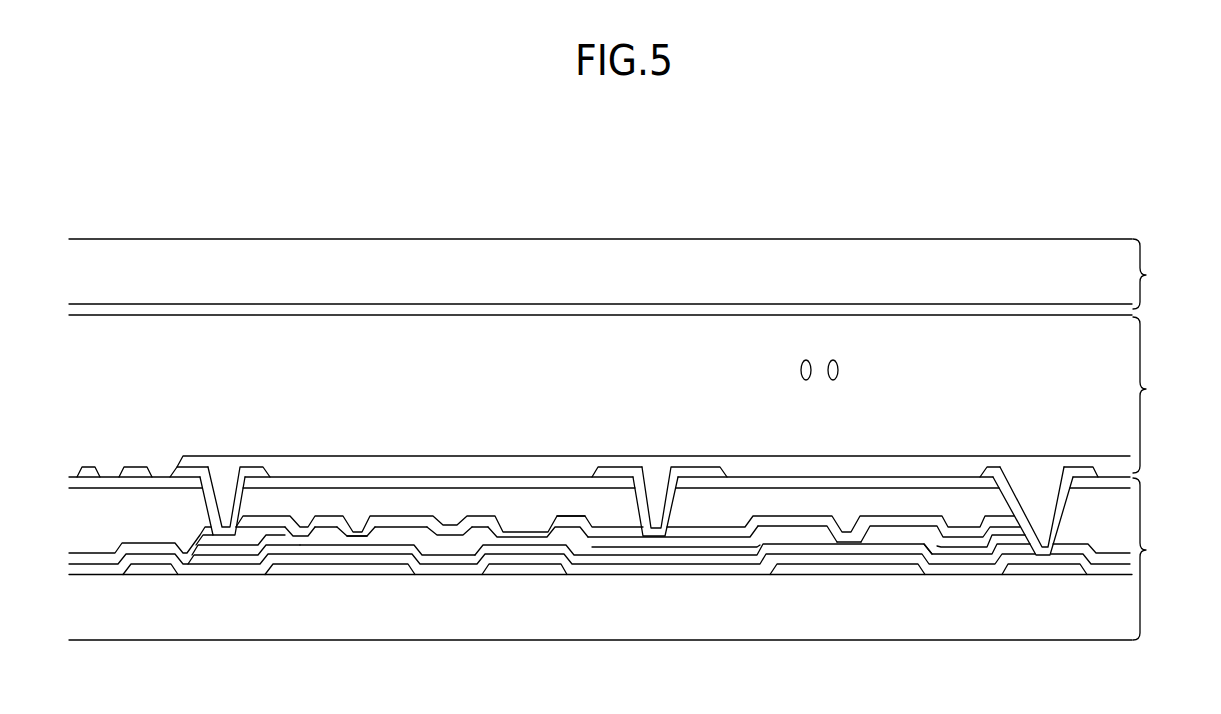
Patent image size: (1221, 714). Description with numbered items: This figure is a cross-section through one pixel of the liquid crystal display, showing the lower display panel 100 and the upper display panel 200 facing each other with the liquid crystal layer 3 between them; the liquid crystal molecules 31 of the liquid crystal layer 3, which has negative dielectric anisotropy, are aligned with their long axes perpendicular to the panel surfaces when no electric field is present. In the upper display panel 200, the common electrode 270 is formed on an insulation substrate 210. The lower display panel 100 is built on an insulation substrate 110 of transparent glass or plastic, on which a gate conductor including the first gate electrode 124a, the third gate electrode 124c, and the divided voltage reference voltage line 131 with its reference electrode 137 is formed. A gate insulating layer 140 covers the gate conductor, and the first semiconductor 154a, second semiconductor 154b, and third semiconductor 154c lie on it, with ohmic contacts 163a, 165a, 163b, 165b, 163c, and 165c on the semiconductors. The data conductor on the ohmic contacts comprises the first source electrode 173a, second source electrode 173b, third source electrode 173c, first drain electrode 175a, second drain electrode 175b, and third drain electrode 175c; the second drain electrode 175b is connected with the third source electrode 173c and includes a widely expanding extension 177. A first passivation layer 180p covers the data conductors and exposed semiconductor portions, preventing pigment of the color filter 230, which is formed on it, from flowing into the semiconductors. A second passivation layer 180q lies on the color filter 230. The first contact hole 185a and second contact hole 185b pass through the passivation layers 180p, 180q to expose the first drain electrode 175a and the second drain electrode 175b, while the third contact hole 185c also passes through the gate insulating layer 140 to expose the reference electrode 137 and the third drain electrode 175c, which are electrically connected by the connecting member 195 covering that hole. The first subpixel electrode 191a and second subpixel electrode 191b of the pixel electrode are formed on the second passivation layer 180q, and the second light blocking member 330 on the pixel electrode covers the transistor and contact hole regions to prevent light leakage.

The upper display panel 200 is at (624, 277).
The insulation substrate 210 is at (687, 254).
The common electrode 270 is at (793, 305).
The liquid crystal layer 3 is at (1150, 395).
The liquid crystal molecules 31 is at (839, 370).
The lower display panel 100 is at (624, 559).
The insulation substrate 110 is at (760, 615).
The divided voltage reference voltage line 131 is at (149, 570).
The first gate electrode 124a is at (300, 566).
The third gate electrode 124c is at (832, 568).
The reference electrode 137 is at (1043, 568).
The gate insulating layer 140 is at (677, 568).
The first semiconductor 154a is at (283, 558).
The second semiconductor 154b is at (395, 558).
The third semiconductor 154c is at (543, 546).
The ohmic contact 163a is at (336, 546).
The ohmic contact 163b is at (357, 540).
The ohmic contact 163c is at (811, 540).
The ohmic contact 165a is at (207, 550).
The ohmic contact 165b is at (432, 540).
The ohmic contact 165c is at (905, 542).
The first source electrode 173a is at (311, 524).
The second source electrode 173b is at (343, 523).
The third source electrode 173c is at (566, 516).
The first drain electrode 175a is at (227, 538).
The second drain electrode 175b is at (392, 523).
The third drain electrode 175c is at (891, 525).
The extension 177 is at (700, 538).
The first passivation layer 180p is at (94, 556).
The second passivation layer 180q is at (494, 481).
The color filter 230 is at (450, 497).
The second light blocking member 330 is at (733, 464).
The first subpixel electrode 191a is at (85, 468).
The second subpixel electrode 191b is at (612, 462).
The connecting member 195 is at (1075, 464).
The first contact hole 185a is at (218, 500).
The second contact hole 185b is at (648, 500).
The third contact hole 185c is at (1022, 500).